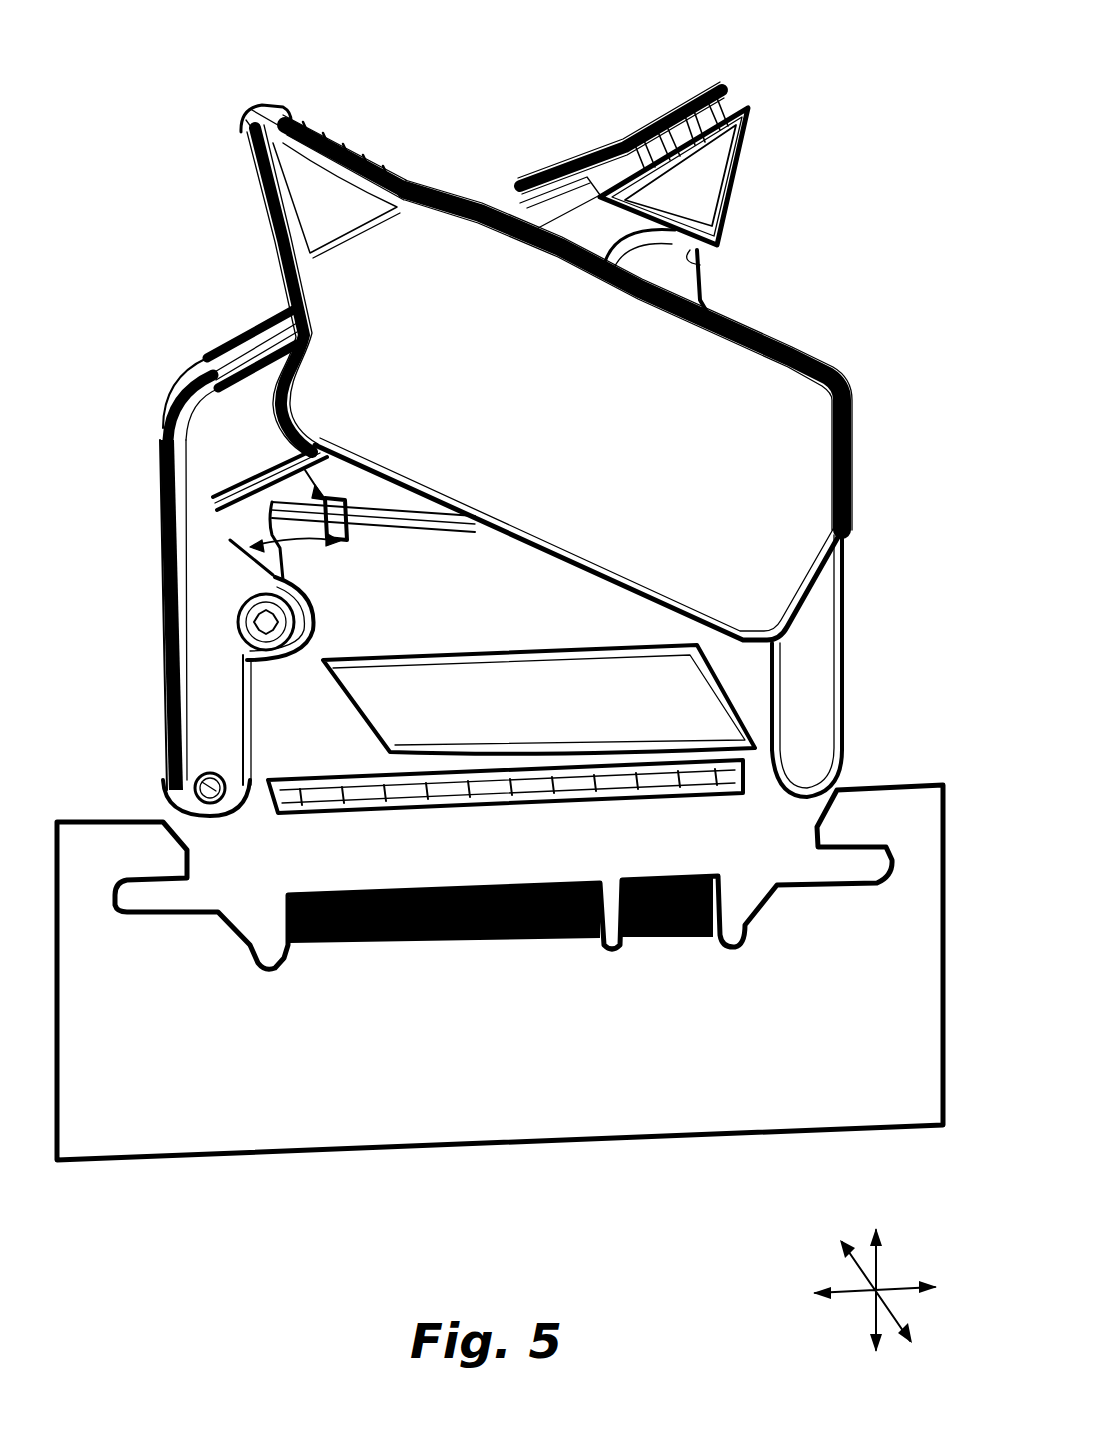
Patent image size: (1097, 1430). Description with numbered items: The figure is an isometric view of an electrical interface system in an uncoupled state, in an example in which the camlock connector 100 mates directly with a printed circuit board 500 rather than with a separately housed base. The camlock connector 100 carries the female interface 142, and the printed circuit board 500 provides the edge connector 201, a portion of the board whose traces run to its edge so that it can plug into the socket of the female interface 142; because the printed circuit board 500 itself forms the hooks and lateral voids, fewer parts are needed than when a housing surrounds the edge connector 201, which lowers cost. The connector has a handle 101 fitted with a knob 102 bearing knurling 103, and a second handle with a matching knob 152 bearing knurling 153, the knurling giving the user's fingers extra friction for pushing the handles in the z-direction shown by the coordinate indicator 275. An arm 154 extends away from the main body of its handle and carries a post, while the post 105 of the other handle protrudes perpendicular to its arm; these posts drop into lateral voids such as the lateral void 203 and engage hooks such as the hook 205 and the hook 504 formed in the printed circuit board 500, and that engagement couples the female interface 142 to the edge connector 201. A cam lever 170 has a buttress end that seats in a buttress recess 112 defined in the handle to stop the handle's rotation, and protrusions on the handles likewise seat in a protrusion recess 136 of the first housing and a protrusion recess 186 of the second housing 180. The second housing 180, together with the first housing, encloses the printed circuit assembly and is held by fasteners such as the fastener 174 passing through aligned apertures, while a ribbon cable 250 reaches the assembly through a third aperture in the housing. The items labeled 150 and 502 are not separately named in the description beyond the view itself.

The camlock connector 100 is at (165, 185).
The handle 101 is at (570, 230).
The knob 102 is at (765, 106).
The knurling 103 is at (667, 143).
The post 105 is at (167, 767).
The buttress recess 112 is at (678, 278).
The protrusion recess 136 is at (308, 455).
The female interface 142 is at (623, 790).
The plate 150 is at (765, 436).
The knob 152 is at (243, 116).
The knurling 153 is at (303, 126).
The arm 154 is at (812, 713).
The cam lever 170 is at (230, 667).
The fastener 174 is at (234, 610).
The second housing 180 is at (258, 782).
The protrusion recess 186 is at (165, 530).
The edge connector 201 is at (517, 937).
The lateral void 203 is at (864, 864).
The hook 205 is at (837, 840).
The ribbon cable 250 is at (713, 735).
The coordinate indicator 275 is at (838, 1335).
The printed circuit board 500 is at (393, 1067).
The notch 502 is at (140, 893).
The hook 504 is at (167, 865).